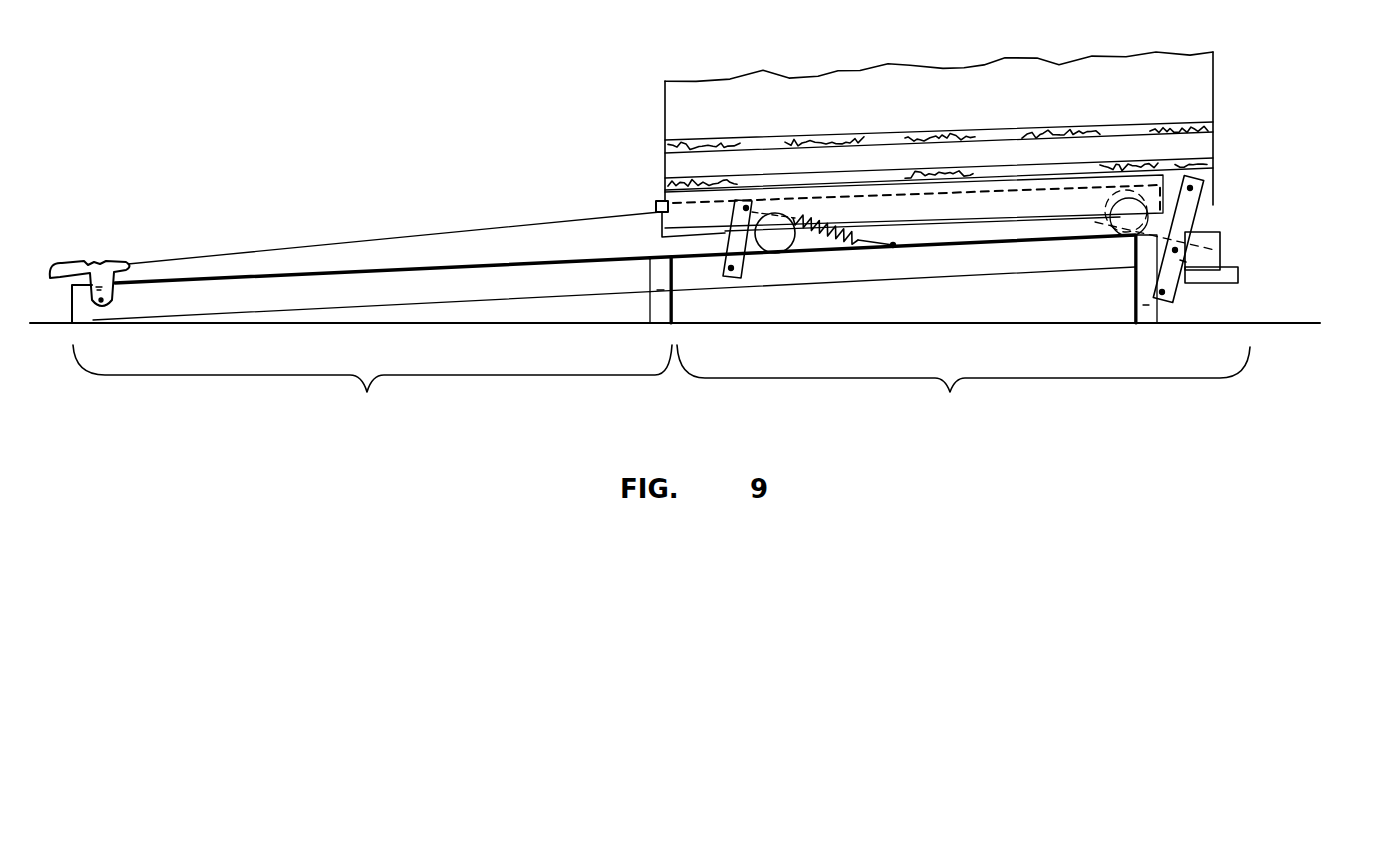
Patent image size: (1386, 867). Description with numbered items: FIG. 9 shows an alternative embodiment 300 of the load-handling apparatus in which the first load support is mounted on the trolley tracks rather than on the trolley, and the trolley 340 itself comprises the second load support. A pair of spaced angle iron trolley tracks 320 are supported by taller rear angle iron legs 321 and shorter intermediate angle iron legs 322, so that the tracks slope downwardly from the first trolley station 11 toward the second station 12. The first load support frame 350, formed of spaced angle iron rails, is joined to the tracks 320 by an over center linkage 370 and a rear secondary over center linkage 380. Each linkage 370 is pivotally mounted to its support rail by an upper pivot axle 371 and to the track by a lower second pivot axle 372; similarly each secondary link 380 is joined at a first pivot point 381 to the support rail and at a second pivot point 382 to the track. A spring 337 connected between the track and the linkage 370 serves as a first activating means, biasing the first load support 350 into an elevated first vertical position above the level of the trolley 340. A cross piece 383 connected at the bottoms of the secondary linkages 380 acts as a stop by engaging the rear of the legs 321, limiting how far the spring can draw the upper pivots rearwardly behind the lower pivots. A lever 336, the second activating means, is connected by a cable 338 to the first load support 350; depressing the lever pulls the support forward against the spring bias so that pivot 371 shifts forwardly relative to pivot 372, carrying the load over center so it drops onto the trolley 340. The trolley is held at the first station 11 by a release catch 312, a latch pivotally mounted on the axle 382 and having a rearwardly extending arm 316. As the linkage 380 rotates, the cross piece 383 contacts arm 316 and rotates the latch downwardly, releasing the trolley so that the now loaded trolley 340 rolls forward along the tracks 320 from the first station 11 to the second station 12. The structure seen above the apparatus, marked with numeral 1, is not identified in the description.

The wall 1 is at (1213, 72).
The alternative embodiment 300 is at (1372, 97).
The lever 336 is at (58, 258).
The cable 338 is at (440, 234).
The second pivot axle 372 is at (668, 250).
The pivot axle 371 is at (735, 200).
The first load support frame 350 is at (850, 205).
The first pivot point 381 is at (1196, 172).
The secondary over center linkage 380 is at (1205, 196).
The second pivot point 382 is at (1192, 235).
The cross piece 383 is at (1187, 255).
The release catch 312 is at (1245, 265).
The rearwardly extending arm 316 is at (1212, 282).
The intermediate angle iron legs 322 is at (675, 302).
The over center linkage 370 is at (757, 252).
The spring 337 is at (950, 250).
The trolley 340 is at (1008, 218).
The trolley tracks 320 is at (580, 283).
The rear angle iron legs 321 is at (1138, 305).
The second station 12 is at (372, 385).
The first trolley station 11 is at (963, 385).